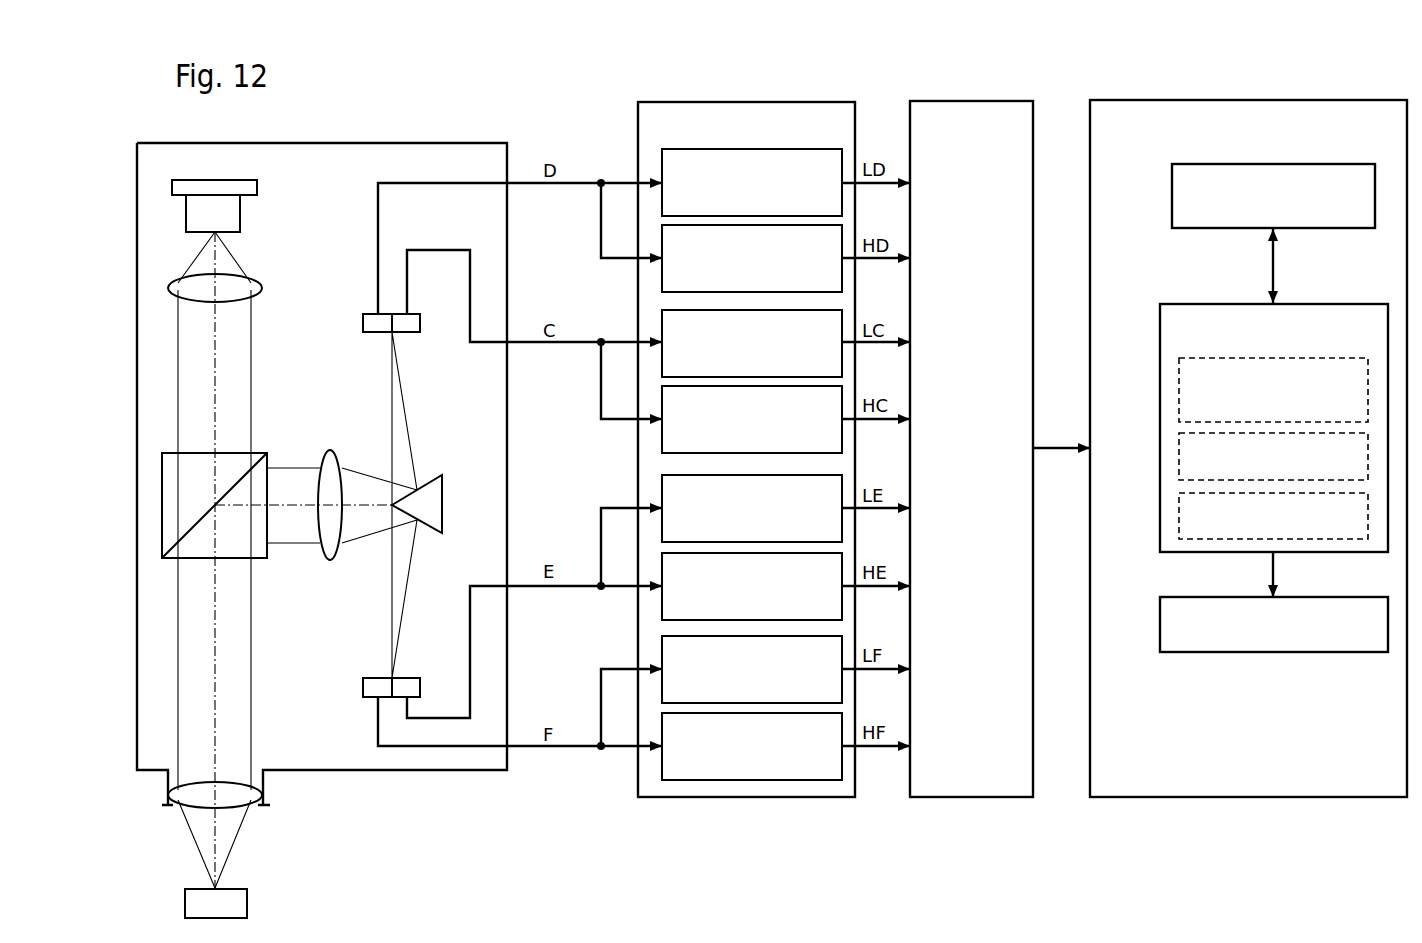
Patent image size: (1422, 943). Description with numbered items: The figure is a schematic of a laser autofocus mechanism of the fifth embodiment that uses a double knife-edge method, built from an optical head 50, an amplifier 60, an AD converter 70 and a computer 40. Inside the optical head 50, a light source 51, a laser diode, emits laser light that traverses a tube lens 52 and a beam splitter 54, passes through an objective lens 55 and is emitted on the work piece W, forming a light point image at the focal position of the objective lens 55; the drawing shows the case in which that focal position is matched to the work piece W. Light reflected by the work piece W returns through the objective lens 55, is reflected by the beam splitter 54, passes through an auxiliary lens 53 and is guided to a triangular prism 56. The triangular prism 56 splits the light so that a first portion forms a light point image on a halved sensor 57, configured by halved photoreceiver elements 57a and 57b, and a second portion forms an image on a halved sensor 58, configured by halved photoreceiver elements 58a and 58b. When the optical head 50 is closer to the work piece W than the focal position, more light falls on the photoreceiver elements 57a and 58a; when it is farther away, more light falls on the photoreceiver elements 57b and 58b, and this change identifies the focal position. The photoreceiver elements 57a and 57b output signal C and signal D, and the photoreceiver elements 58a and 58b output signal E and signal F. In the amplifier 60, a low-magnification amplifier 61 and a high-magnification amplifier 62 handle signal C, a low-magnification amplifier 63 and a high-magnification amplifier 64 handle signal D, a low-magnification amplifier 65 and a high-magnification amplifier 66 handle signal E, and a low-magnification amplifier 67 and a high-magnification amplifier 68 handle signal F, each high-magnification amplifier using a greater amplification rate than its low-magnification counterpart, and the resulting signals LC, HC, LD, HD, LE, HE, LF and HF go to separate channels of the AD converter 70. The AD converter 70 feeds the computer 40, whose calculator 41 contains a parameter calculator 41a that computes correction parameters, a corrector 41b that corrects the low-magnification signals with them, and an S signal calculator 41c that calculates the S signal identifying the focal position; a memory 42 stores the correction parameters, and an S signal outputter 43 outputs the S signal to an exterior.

The optical head 50 is at (318, 143).
The light source 51 is at (257, 187).
The tube lens 52 is at (263, 288).
The auxiliary lens 53 is at (331, 450).
The beam splitter 54 is at (258, 452).
The objective lens 55 is at (270, 795).
The triangular prism 56 is at (443, 505).
The halved sensor 57 is at (368, 310).
The photoreceiver element 57a is at (413, 334).
The photoreceiver element 57b is at (371, 334).
The halved sensor 58 is at (359, 690).
The photoreceiver element 58a is at (413, 676).
The photoreceiver element 58b is at (371, 676).
The work piece W is at (248, 903).
The amplifier 60 is at (745, 797).
The low-magnification amplifier 61 is at (662, 323).
The high-magnification amplifier 62 is at (662, 401).
The low-magnification amplifier 63 is at (662, 161).
The high-magnification amplifier 64 is at (662, 239).
The low-magnification amplifier 65 is at (662, 489).
The high-magnification amplifier 66 is at (662, 567).
The low-magnification amplifier 67 is at (662, 650).
The high-magnification amplifier 68 is at (662, 727).
The AD converter 70 is at (970, 797).
The computer 40 is at (1240, 797).
The calculator 41 is at (1160, 338).
The parameter calculator 41a is at (1179, 391).
The corrector 41b is at (1179, 458).
The S signal calculator 41c is at (1179, 517).
The memory 42 is at (1172, 196).
The S signal outputter 43 is at (1160, 627).